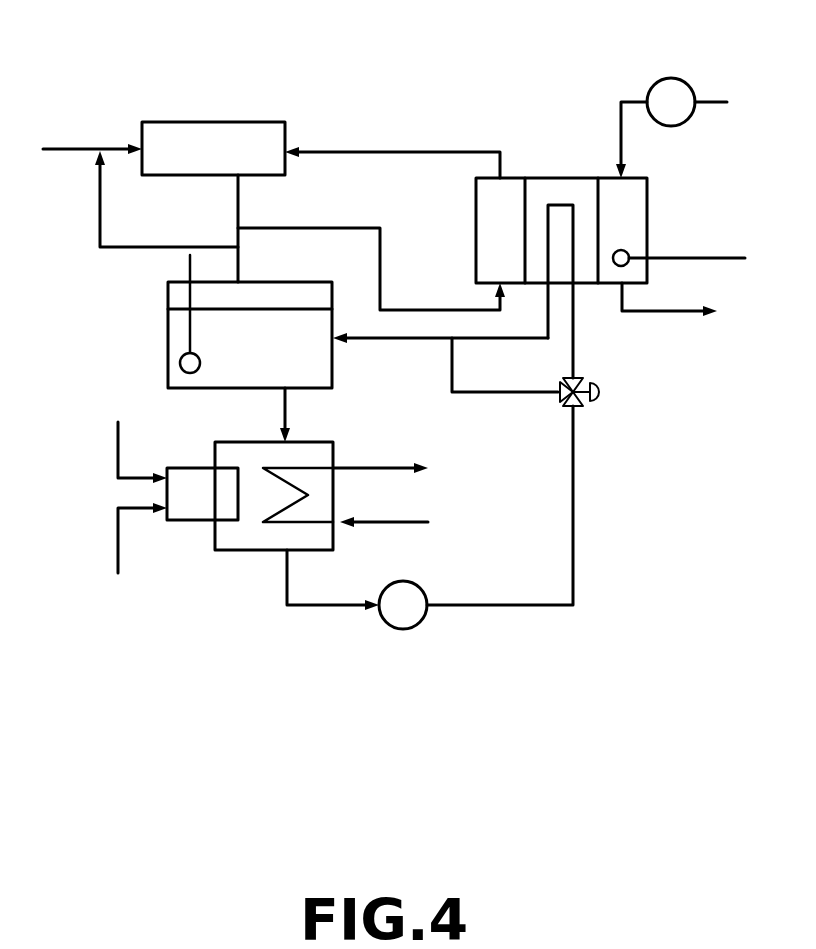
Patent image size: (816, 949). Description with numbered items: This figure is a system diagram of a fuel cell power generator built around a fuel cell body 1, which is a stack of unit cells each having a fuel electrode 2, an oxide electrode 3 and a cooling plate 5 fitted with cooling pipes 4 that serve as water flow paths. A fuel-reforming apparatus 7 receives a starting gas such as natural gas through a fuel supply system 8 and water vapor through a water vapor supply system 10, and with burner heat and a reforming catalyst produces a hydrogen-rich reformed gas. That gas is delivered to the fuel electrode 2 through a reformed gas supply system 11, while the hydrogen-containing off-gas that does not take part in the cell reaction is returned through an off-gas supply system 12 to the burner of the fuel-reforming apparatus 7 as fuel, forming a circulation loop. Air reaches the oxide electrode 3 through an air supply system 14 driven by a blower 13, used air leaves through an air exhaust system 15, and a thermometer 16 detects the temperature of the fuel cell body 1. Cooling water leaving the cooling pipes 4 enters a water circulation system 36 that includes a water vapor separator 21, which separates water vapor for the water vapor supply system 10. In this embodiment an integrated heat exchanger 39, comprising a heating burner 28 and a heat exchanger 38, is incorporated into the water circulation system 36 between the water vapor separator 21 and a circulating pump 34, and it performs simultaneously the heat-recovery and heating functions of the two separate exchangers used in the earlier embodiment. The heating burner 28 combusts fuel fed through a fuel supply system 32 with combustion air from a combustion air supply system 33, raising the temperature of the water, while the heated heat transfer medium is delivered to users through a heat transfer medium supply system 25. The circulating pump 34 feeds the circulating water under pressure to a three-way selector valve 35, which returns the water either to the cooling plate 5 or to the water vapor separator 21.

The fuel cell body 1 is at (537, 165).
The fuel electrode 2 is at (476, 222).
The oxide electrode 3 is at (646, 222).
The cooling pipes 4 is at (578, 263).
The cooling plate 5 is at (585, 186).
The fuel-reforming apparatus 7 is at (210, 125).
The fuel supply system 8 is at (60, 147).
The water vapor supply system 10 is at (99, 203).
The reformed gas supply system 11 is at (332, 227).
The off-gas supply system 12 is at (382, 151).
The blower 13 is at (667, 78).
The air supply system 14 is at (716, 102).
The air exhaust system 15 is at (672, 314).
The thermometer 16 is at (723, 262).
The water vapor separator 21 is at (168, 345).
The heat transfer medium supply system 25 is at (388, 524).
The heating burner 28 is at (195, 516).
The fuel supply system 32 is at (118, 535).
The combustion air supply system 33 is at (118, 436).
The circulating pump 34 is at (420, 622).
The three-way selector valve 35 is at (578, 402).
The water circulation system 36 is at (576, 572).
The heat exchanger 38 is at (258, 545).
The integrated heat exchanger 39 is at (340, 432).